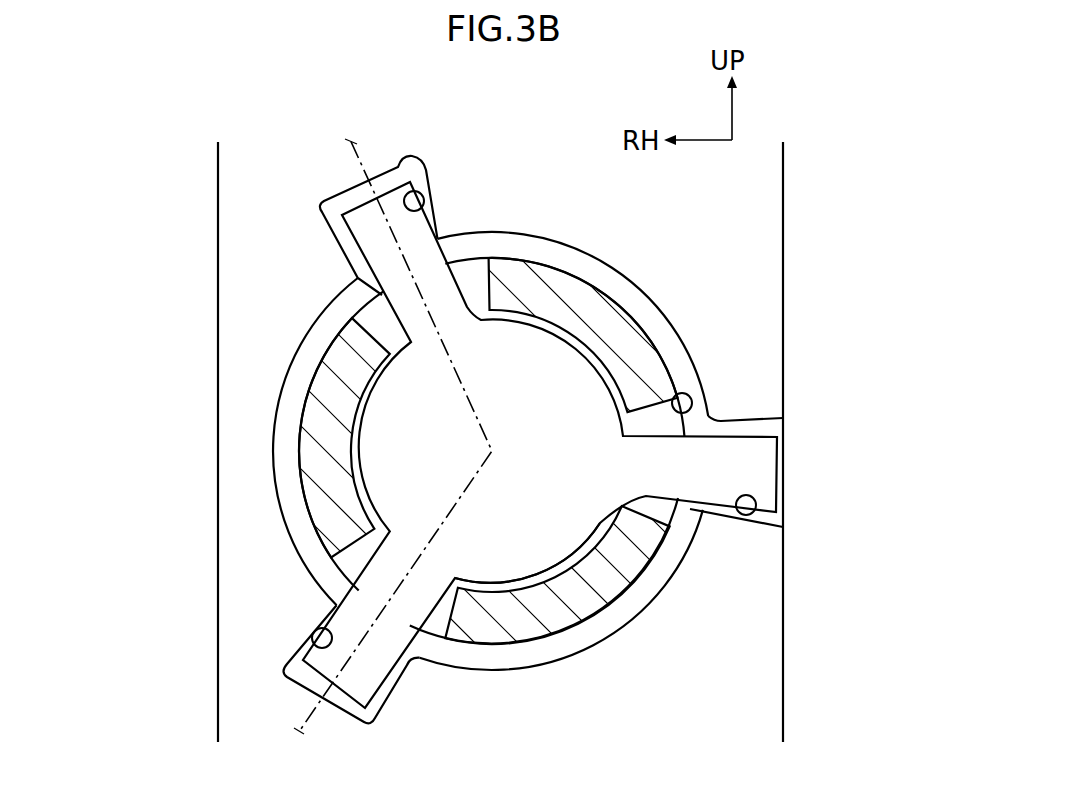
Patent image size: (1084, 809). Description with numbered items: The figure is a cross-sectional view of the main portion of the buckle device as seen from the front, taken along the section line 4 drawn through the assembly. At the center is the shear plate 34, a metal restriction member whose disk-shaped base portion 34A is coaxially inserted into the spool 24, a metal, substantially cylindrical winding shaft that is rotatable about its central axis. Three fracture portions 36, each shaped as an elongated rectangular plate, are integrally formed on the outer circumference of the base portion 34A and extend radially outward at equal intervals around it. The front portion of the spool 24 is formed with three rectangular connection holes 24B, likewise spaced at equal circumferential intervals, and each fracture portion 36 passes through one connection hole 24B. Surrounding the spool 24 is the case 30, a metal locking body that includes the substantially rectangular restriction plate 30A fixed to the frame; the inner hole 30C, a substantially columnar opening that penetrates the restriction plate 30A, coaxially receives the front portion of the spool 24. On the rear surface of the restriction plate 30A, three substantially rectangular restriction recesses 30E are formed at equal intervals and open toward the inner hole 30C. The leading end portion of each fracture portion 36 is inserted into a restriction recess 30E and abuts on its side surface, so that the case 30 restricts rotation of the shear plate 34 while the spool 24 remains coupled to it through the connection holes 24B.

The section line 4 is at (340, 151).
The spool 24 is at (616, 292).
The connection hole 24B is at (366, 324).
The case 30 is at (218, 219).
The restriction plate 30A is at (218, 530).
The inner hole 30C is at (576, 246).
The restriction recess 30E is at (520, 205).
The shear plate 34 is at (376, 389).
The base portion 34A is at (585, 615).
The fracture portion 36 is at (333, 228).